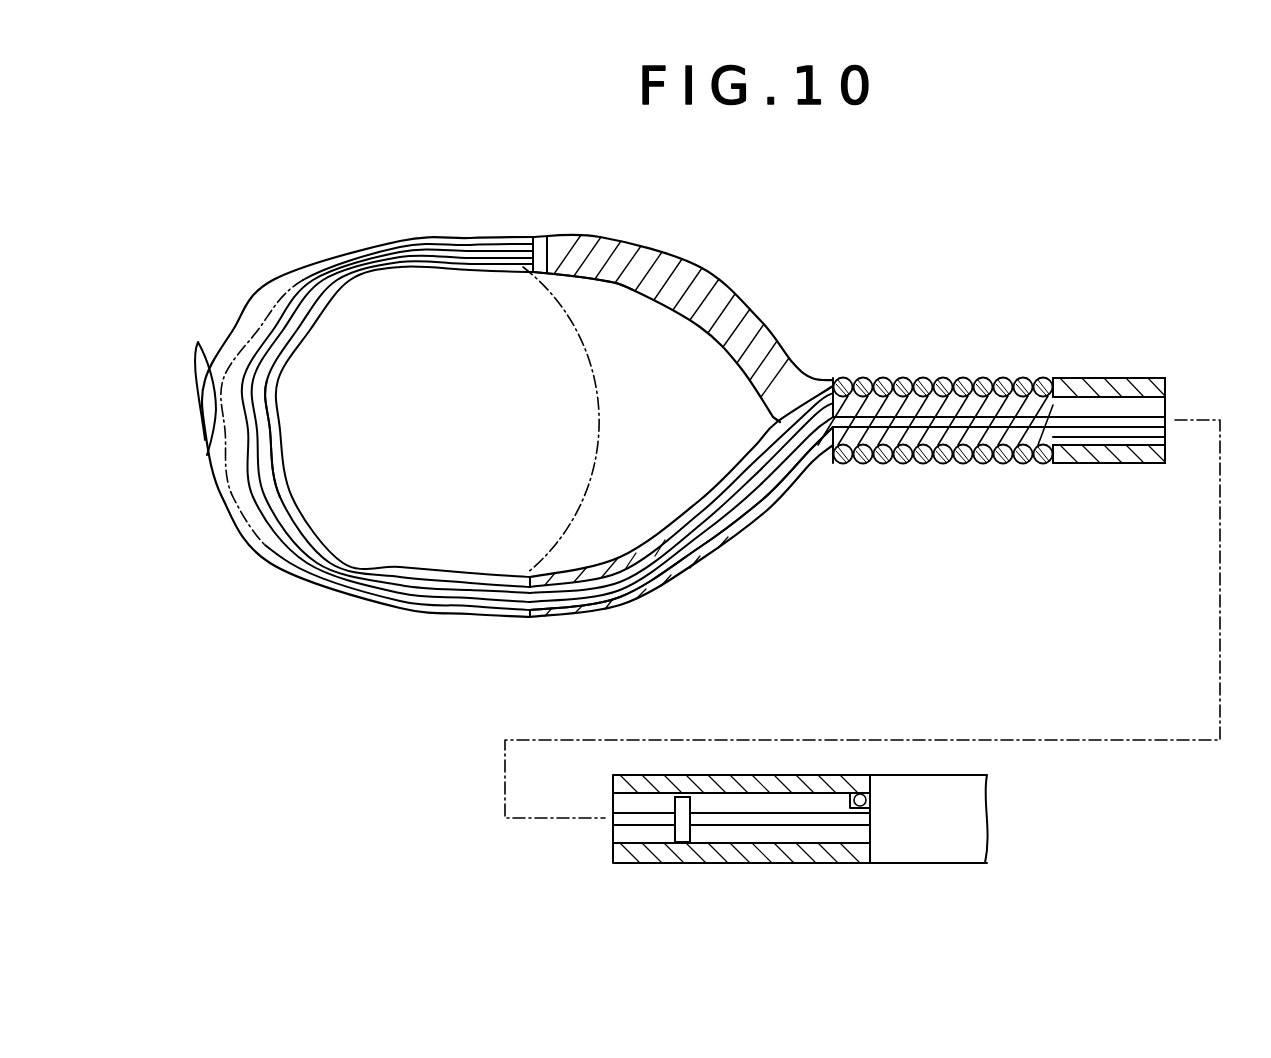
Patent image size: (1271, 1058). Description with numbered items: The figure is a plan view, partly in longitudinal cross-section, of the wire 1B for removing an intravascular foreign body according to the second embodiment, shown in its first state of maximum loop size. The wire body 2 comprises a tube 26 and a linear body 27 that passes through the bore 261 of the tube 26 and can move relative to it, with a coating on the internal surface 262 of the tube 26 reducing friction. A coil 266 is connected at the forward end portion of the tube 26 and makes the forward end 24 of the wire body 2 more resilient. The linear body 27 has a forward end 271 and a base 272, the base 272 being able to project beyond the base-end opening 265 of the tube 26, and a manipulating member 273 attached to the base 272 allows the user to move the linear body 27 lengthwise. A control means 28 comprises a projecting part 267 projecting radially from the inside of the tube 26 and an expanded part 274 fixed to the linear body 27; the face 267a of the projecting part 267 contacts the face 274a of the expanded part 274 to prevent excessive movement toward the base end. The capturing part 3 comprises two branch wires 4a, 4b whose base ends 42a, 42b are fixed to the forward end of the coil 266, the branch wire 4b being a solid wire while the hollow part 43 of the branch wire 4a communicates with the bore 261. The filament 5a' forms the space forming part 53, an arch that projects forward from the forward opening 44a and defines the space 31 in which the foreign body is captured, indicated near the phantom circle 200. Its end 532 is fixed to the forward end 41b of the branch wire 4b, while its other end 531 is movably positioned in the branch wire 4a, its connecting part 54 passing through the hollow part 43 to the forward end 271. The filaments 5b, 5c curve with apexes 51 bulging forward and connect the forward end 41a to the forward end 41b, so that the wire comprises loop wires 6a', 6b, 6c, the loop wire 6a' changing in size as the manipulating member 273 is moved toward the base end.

The wire for removing an intravascular foreign body 1B is at (971, 231).
The wire body 2 is at (1098, 296).
The capturing part 3 is at (604, 631).
The branch wire 4a is at (715, 565).
The branch wire 4b is at (700, 280).
The filament 5b is at (277, 420).
The filament 5c is at (257, 485).
The filament 5a' is at (377, 445).
The loop wire 6a' is at (230, 482).
The loop wire 6b is at (277, 423).
The loop wire 6c is at (250, 449).
The forward end 24 is at (1110, 351).
The tube 26 is at (640, 786).
The linear body 27 is at (1145, 378).
The control means 28 is at (862, 803).
The space 31 is at (543, 393).
The forward end 41a is at (555, 608).
The forward end 41b is at (545, 262).
The base end 42a is at (818, 455).
The base end 42b is at (721, 518).
The hollow part 43 is at (673, 580).
The forward opening 44a is at (517, 608).
The apex 51 is at (196, 382).
The space forming part 53 is at (267, 292).
The connecting part 54 is at (733, 528).
The phantom circle 200 is at (590, 325).
The bore 261 is at (1155, 405).
The internal surface 262 is at (1168, 447).
The base-end opening 265 is at (870, 835).
The coil 266 is at (930, 378).
The projecting part 267 is at (890, 802).
The face 267a is at (848, 787).
The forward end 271 is at (855, 422).
The base 272 is at (780, 820).
The manipulating member 273 is at (962, 850).
The expanded part 274 is at (678, 832).
The face 274a is at (690, 832).
The end 531 is at (497, 614).
The end 532 is at (517, 260).